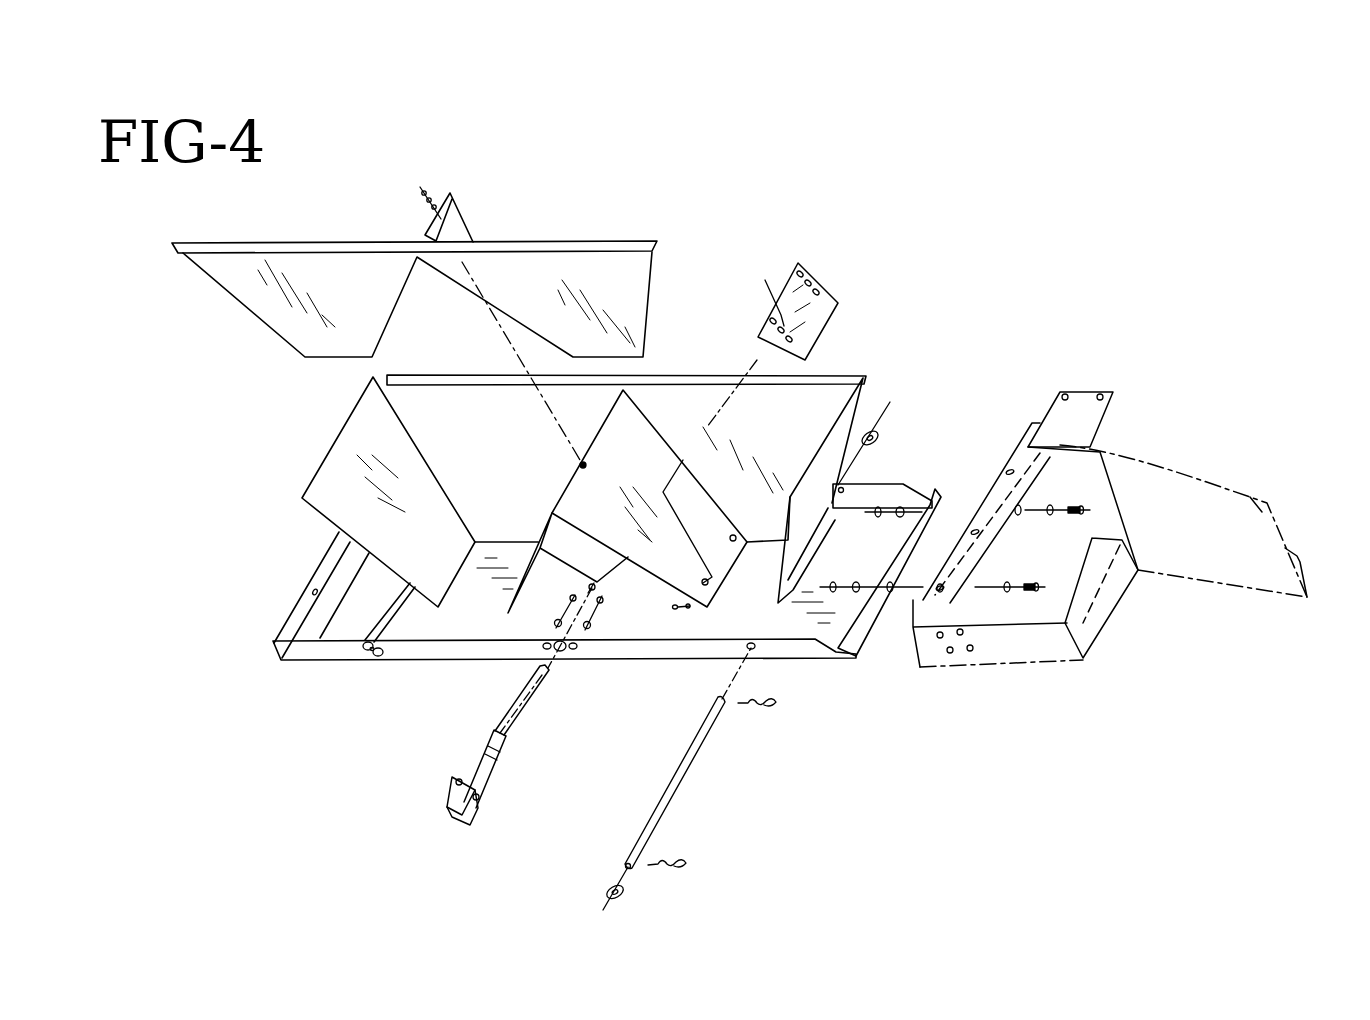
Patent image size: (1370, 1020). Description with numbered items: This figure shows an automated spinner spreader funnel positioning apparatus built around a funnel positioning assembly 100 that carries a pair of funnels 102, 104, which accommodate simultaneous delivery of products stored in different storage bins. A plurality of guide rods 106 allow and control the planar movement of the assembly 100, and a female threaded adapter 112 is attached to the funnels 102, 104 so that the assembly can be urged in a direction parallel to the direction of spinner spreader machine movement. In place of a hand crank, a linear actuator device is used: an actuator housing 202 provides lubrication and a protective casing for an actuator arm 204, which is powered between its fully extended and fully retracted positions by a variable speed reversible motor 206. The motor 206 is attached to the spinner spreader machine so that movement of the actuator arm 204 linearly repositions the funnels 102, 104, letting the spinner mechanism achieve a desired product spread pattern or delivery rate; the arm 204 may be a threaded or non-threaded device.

The funnel positioning assembly 100 is at (1017, 260).
The funnel 102 is at (822, 397).
The funnel 104 is at (480, 417).
The guide rod 106 is at (687, 779).
The female threaded adapter 112 is at (603, 582).
The actuator housing 202 is at (493, 787).
The actuator arm 204 is at (538, 703).
The variable speed reversible motor 206 is at (467, 779).